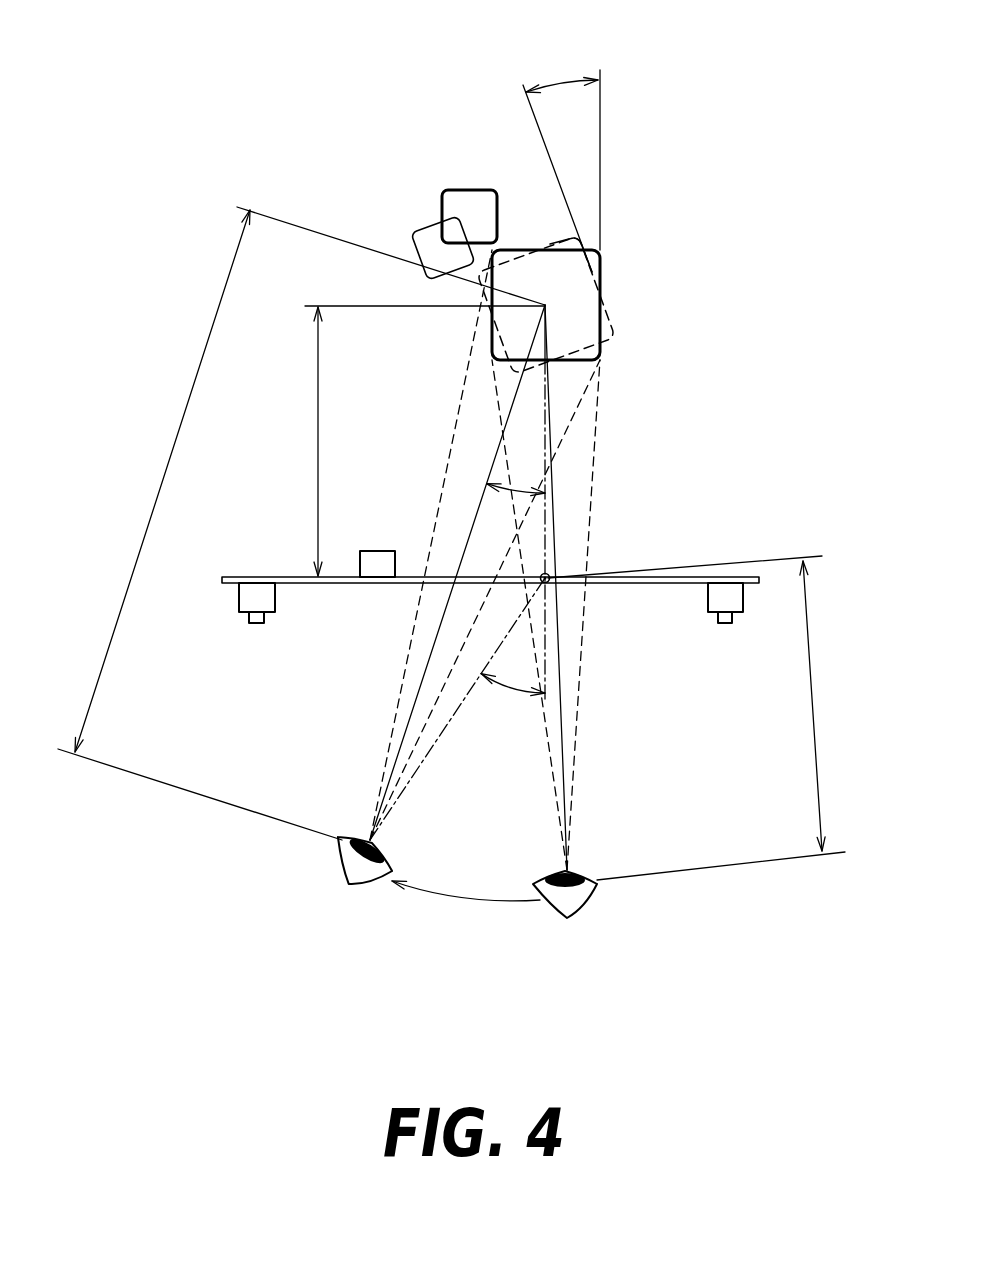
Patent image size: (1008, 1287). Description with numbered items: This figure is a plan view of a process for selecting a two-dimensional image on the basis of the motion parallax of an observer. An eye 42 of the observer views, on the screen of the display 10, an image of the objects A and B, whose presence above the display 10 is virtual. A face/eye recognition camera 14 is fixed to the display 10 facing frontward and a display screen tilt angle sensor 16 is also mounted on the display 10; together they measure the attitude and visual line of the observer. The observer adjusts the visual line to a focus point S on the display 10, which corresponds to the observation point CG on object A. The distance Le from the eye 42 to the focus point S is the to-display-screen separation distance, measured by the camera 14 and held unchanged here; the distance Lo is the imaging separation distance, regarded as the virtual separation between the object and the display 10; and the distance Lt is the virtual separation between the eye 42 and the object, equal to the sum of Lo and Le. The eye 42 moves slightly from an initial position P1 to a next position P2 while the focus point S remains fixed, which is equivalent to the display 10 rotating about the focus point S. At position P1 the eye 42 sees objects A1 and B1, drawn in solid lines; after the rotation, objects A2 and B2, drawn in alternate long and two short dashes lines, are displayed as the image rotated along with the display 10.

The display 10 is at (299, 576).
The face/eye recognition camera 14 is at (239, 596).
The display screen tilt angle sensor 16 is at (375, 551).
The eye of the observer 42 is at (340, 862).
The object A1 is at (600, 255).
The object A2 is at (612, 328).
The object B1 is at (465, 190).
The object B2 is at (412, 230).
The observation point CG is at (545, 305).
The focus point S is at (552, 575).
The initial position P1 is at (546, 633).
The next position P2 is at (469, 588).
The virtual separation distance Lt is at (301, 523).
The imaging separation distance Lo is at (415, 441).
The to-display-screen separation distance Le is at (696, 718).